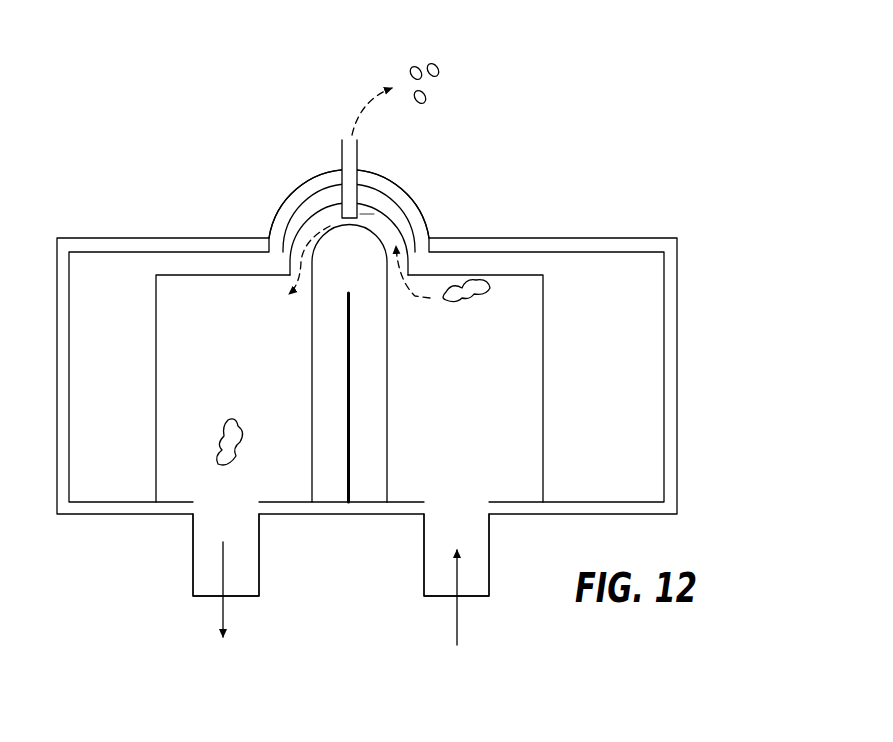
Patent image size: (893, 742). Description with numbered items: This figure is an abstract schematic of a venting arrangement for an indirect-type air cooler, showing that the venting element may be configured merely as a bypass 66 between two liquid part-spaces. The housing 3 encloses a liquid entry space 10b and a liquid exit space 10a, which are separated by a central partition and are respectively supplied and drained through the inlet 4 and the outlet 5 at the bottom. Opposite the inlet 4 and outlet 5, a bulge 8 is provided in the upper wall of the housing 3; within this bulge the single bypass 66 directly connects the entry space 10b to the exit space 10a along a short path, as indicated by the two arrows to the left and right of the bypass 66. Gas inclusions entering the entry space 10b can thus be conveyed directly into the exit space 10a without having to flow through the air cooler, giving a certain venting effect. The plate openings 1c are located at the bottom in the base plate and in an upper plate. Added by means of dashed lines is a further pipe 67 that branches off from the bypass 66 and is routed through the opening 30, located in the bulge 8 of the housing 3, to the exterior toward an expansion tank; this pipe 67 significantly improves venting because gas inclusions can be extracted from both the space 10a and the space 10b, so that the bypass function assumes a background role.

The housing 3 is at (543, 238).
The bulge 8 is at (295, 192).
The opening 30 is at (338, 170).
The bypass 66 is at (367, 207).
The pipe 67 is at (342, 140).
The plate openings 1c is at (290, 277).
The liquid exit space 10a is at (248, 366).
The liquid entry space 10b is at (490, 366).
The inlet 4 is at (424, 552).
The outlet 5 is at (193, 552).